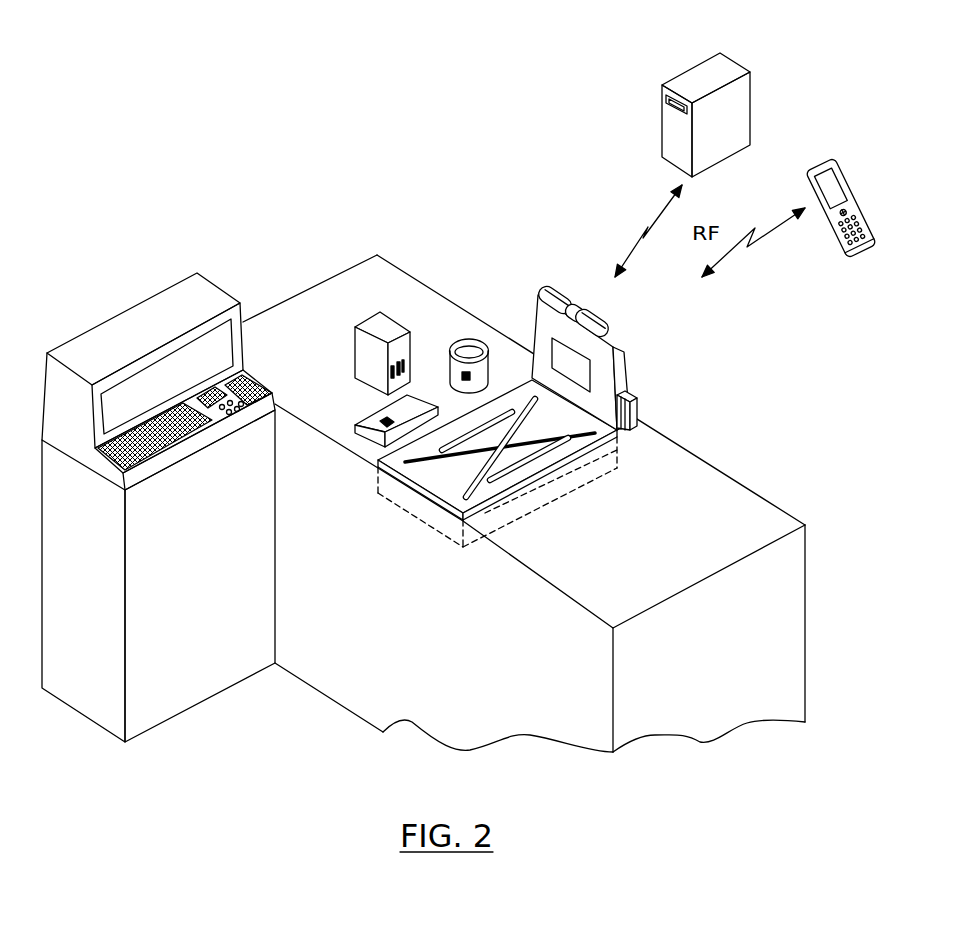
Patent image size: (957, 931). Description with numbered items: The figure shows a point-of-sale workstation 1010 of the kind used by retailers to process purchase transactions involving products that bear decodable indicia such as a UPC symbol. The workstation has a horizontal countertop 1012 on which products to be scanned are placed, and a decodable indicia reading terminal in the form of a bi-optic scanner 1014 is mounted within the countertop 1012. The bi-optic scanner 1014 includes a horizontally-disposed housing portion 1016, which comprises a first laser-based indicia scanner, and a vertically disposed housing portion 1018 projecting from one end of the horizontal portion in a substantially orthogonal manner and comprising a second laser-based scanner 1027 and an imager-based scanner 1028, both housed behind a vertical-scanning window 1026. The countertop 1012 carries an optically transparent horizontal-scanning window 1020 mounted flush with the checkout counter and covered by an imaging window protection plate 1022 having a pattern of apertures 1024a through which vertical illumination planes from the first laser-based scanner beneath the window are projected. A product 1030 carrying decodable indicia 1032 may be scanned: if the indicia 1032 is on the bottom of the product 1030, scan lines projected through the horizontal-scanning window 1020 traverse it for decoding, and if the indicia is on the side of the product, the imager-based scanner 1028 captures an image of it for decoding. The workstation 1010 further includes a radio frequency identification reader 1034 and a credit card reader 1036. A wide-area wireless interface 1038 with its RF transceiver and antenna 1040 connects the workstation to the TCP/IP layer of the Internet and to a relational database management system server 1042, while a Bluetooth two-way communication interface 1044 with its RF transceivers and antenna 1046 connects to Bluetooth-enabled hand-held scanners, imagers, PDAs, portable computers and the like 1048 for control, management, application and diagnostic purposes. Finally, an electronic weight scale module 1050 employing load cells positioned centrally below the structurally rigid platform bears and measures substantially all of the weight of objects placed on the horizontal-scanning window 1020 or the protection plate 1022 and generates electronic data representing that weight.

The point-of-sale workstation 1010 is at (582, 97).
The horizontal countertop 1012 is at (652, 590).
The bi-optic scanner 1014 is at (647, 313).
The horizontally-disposed housing portion 1016 is at (580, 431).
The vertically disposed housing portion 1018 is at (535, 347).
The horizontal-scanning window 1020 is at (510, 519).
The imaging window protection plate 1022 is at (433, 478).
The apertures 1024a is at (577, 438).
The vertical-scanning window 1026 is at (703, 369).
The second laser-based scanner 1027 is at (571, 365).
The imager-based scanner 1028 is at (582, 375).
The product 1030 is at (339, 298).
The decodable indicia 1032 is at (390, 376).
The radio frequency identification (RFID) reader 1034 is at (547, 290).
The credit card reader 1036 is at (640, 408).
The wide-area wireless (WIFI) interface 1038 is at (660, 217).
The RF transceiver and antenna 1040 is at (600, 319).
The relational database management system (RDBMS) server 1042 is at (743, 121).
The Bluetooth 2-way communication interface 1044 is at (768, 237).
The RF transceivers and antenna 1046 is at (601, 316).
The Bluetooth-enabled hand-held devices 1048 is at (843, 176).
The electronic weight scale module 1050 is at (597, 468).